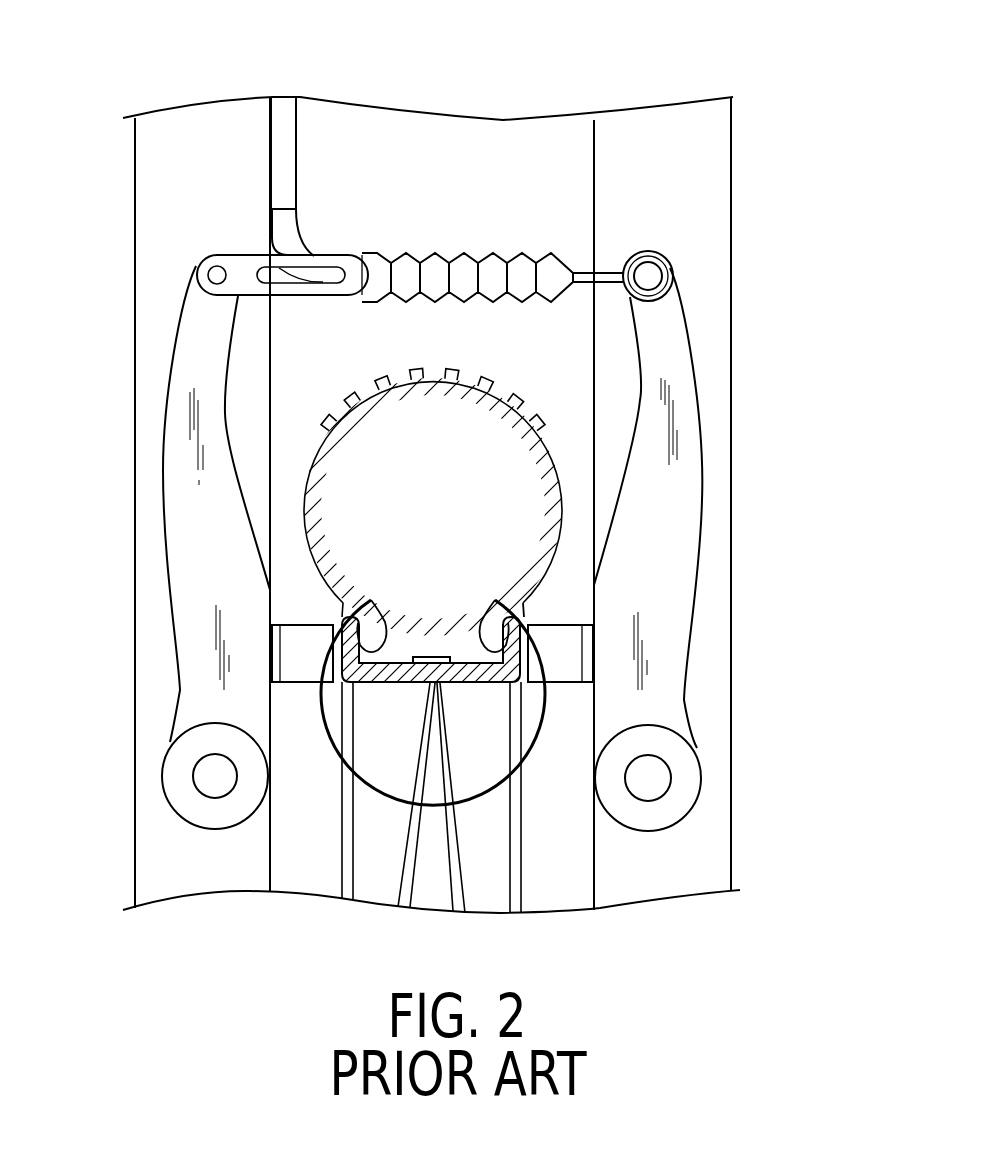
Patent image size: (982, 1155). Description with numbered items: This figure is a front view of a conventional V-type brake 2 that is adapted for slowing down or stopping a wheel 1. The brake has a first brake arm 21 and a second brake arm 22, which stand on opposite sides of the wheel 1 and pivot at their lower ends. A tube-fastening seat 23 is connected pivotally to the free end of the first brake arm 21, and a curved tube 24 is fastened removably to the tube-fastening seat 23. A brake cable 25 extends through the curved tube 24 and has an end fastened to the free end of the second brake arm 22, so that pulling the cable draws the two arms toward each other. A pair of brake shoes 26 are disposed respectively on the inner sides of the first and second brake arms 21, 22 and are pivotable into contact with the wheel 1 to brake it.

The wheel 1 is at (557, 460).
The V-type brake 2 is at (494, 159).
The first brake arm 21 is at (163, 502).
The second brake arm 22 is at (703, 502).
The tube-fastening seat 23 is at (345, 254).
The curved tube 24 is at (270, 237).
The brake cable 25 is at (609, 273).
The brake shoes 26 is at (302, 625).